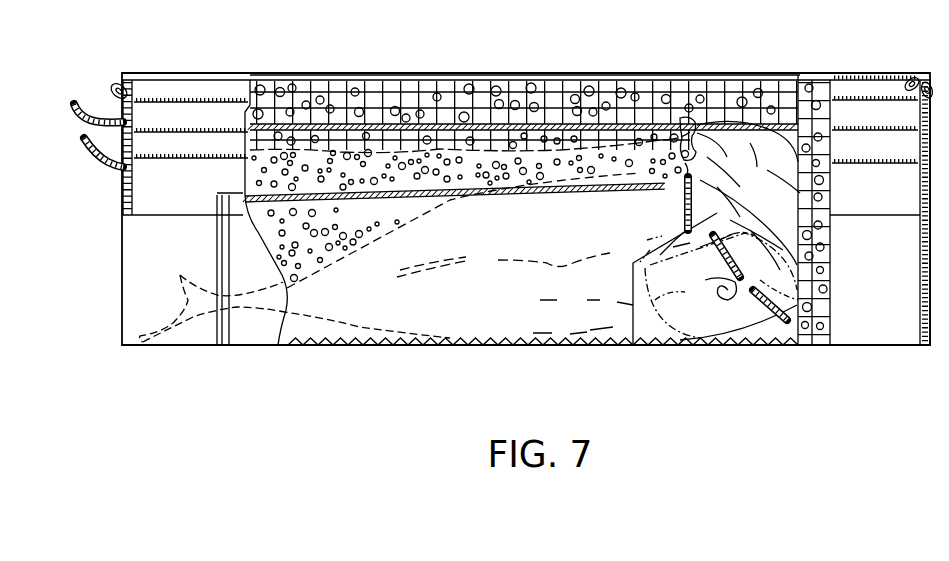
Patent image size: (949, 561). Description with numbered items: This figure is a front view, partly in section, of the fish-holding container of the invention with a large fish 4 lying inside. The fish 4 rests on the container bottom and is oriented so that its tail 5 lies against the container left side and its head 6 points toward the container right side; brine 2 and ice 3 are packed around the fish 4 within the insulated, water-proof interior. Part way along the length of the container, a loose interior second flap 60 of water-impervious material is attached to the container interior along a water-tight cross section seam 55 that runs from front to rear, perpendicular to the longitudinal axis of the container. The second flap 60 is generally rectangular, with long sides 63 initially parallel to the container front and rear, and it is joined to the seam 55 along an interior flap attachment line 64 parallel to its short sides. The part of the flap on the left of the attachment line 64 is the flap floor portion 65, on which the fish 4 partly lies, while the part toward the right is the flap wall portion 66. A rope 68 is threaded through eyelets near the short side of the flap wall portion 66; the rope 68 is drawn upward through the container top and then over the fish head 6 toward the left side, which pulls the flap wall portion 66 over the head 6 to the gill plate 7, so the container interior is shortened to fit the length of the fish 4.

The brine 2 is at (305, 323).
The ice 3 is at (306, 88).
The fish 4 is at (495, 296).
The tail 5 is at (202, 304).
The head 6 is at (647, 270).
The gill plate 7 is at (664, 305).
The cross section seam 55 is at (803, 267).
The interior second flap 60 is at (703, 127).
The interior flap long sides 63 is at (443, 329).
The interior flap attachment line 64 is at (795, 340).
The flap floor portion 65 is at (585, 334).
The flap wall portion 66 is at (723, 143).
The rope 68 is at (77, 103).